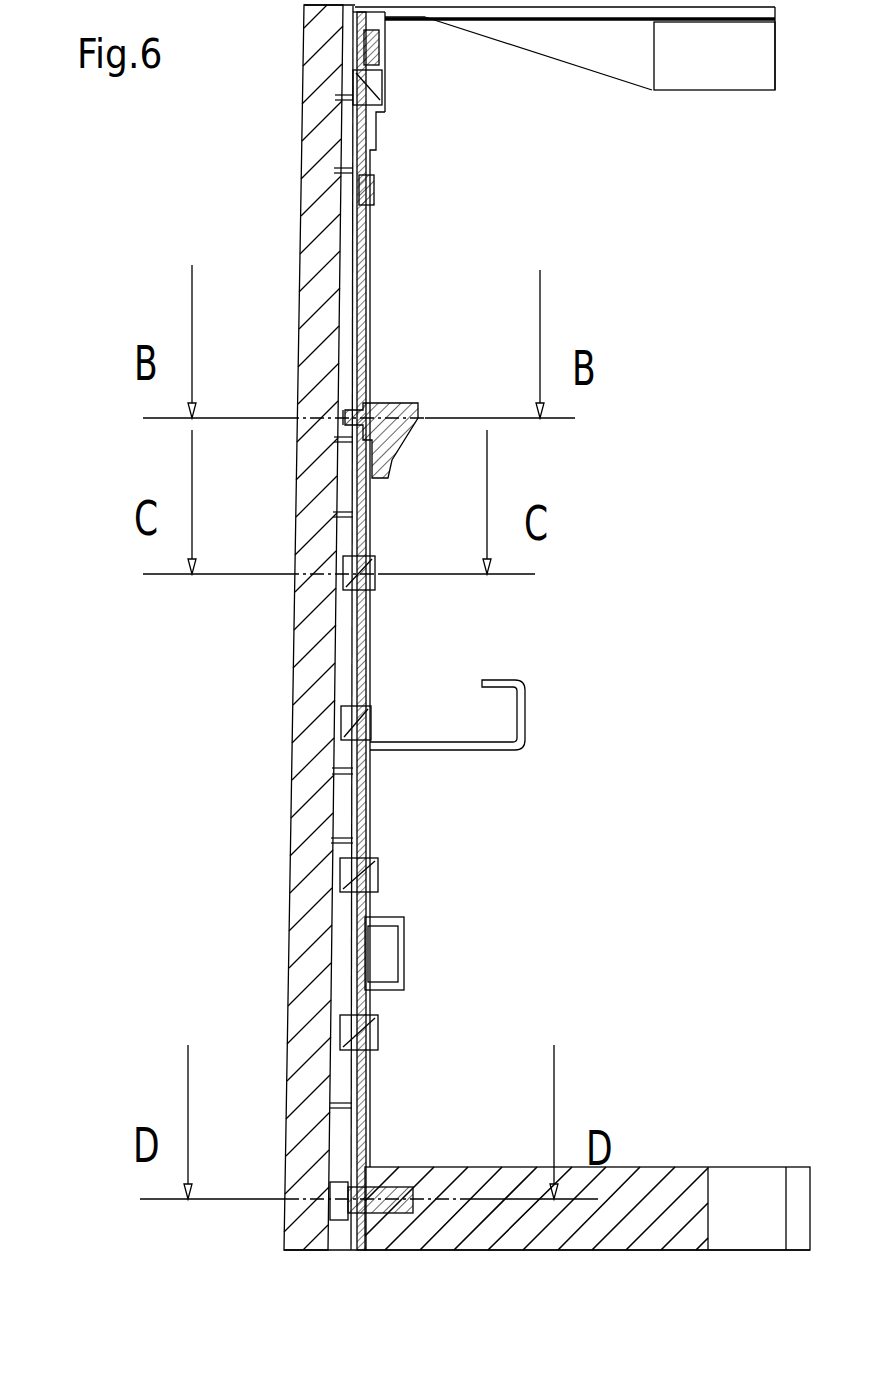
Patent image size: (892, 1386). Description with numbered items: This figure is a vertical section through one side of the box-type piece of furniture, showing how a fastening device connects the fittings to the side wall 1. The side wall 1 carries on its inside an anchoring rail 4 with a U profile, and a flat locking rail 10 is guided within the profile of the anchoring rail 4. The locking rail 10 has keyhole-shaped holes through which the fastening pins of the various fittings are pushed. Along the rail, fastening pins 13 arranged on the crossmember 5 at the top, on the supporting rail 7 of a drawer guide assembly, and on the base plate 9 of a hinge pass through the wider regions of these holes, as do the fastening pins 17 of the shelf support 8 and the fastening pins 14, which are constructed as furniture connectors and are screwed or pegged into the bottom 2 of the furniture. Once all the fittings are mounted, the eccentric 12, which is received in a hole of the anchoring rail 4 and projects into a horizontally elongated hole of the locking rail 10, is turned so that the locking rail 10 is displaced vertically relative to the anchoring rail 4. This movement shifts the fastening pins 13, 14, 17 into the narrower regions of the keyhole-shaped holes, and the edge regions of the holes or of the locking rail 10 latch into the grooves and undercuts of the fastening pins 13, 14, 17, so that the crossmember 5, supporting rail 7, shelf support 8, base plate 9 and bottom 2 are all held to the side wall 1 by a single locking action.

The side wall 1 is at (318, 77).
The bottom 2 is at (632, 1227).
The anchoring rail 4 is at (372, 232).
The crossmember 5 is at (765, 75).
The supporting rail 7 is at (525, 706).
The shelf support 8 is at (392, 462).
The base plate 9 is at (405, 942).
The locking rail 10 is at (374, 318).
The eccentric 12 is at (374, 196).
The fastening pin 13 is at (350, 100).
The fastening pin 14 is at (330, 1196).
The fastening pin 17 is at (343, 420).